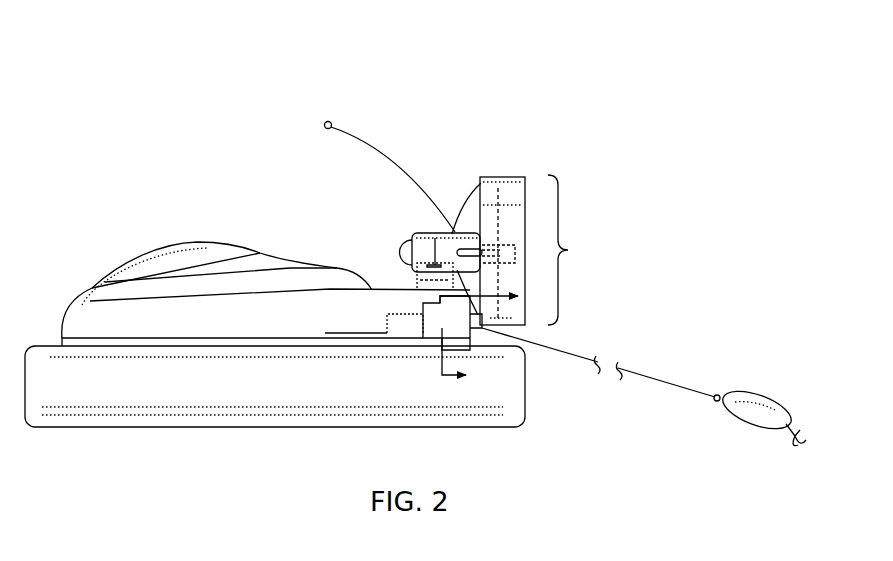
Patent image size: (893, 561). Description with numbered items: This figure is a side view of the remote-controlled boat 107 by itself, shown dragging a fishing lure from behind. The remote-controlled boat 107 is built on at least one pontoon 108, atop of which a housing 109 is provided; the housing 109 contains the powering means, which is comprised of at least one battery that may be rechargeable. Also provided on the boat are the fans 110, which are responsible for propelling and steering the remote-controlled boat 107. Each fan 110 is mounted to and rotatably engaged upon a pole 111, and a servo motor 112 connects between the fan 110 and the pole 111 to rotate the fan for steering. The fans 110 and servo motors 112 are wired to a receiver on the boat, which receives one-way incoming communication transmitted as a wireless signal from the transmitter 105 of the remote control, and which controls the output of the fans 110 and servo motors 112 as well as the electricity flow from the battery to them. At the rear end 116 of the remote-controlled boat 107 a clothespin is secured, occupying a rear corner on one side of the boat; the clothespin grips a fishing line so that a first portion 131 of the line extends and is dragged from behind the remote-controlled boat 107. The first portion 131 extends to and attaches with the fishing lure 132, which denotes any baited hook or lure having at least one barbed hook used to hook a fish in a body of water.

The remote-controlled boat 107 is at (131, 80).
The pontoon 108 is at (147, 397).
The housing 109 is at (273, 258).
The transmitter 105 is at (397, 318).
The fan 110 is at (544, 250).
The pole 111 is at (415, 280).
The servo motor 112 is at (435, 264).
The rear end 116 is at (486, 354).
The first portion 131 is at (652, 378).
The fishing lure 132 is at (757, 398).